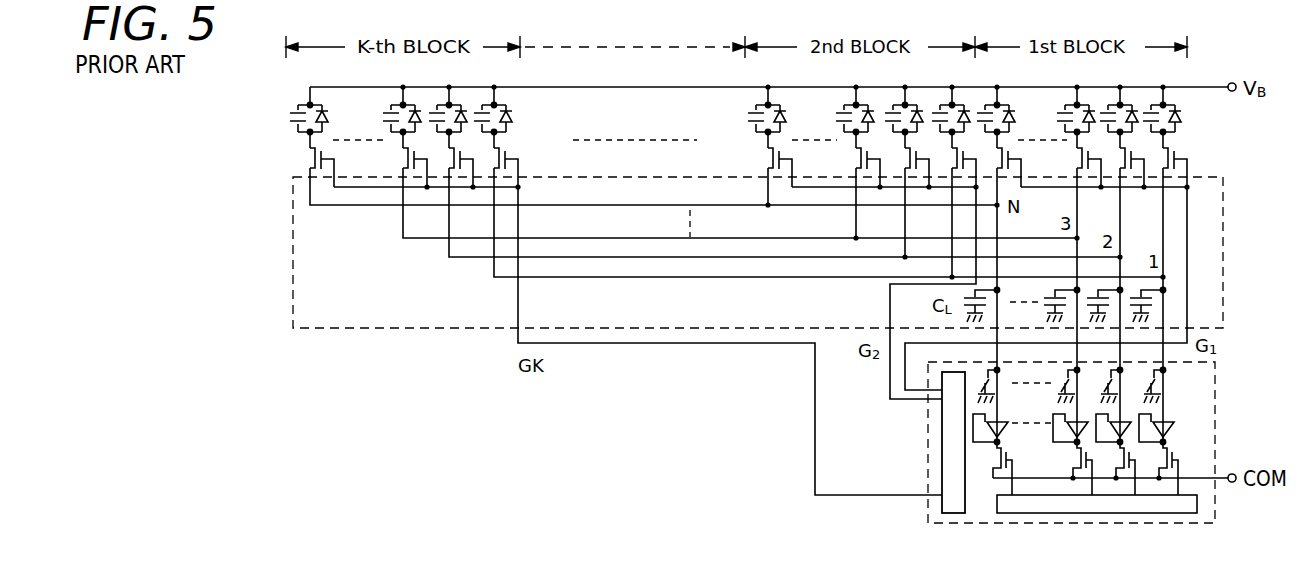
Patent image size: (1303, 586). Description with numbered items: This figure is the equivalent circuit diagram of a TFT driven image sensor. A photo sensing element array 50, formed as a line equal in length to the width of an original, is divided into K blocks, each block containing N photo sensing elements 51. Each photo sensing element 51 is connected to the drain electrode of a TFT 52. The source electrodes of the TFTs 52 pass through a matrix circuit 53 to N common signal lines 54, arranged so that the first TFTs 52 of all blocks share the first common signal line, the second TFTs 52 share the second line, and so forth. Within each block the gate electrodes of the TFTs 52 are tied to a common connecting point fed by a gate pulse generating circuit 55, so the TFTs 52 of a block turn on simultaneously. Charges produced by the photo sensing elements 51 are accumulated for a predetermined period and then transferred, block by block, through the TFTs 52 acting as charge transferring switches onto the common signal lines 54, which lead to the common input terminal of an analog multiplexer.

The photo sensing element array 50 is at (740, 114).
The photo sensing element 51 is at (387, 102).
The TFT 52 is at (313, 158).
The matrix circuit 53 is at (418, 329).
The common signal line 54 is at (997, 349).
The gate pulse generating circuit 55 is at (943, 457).